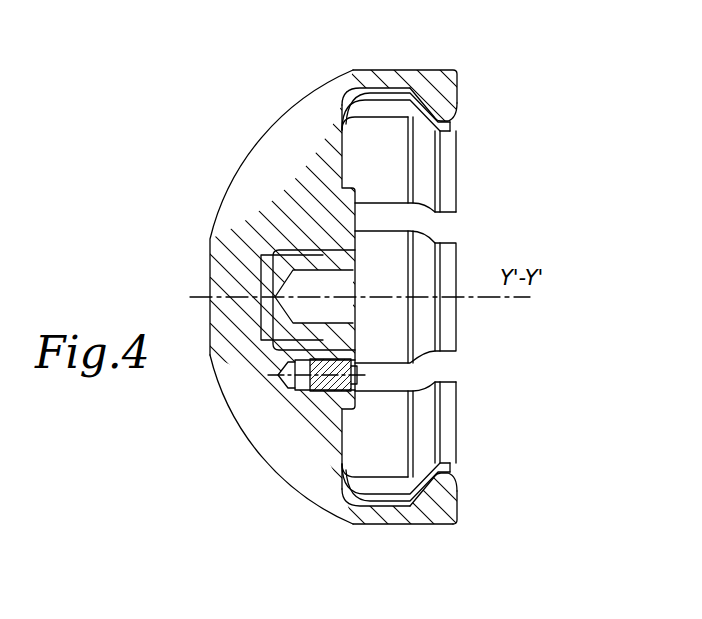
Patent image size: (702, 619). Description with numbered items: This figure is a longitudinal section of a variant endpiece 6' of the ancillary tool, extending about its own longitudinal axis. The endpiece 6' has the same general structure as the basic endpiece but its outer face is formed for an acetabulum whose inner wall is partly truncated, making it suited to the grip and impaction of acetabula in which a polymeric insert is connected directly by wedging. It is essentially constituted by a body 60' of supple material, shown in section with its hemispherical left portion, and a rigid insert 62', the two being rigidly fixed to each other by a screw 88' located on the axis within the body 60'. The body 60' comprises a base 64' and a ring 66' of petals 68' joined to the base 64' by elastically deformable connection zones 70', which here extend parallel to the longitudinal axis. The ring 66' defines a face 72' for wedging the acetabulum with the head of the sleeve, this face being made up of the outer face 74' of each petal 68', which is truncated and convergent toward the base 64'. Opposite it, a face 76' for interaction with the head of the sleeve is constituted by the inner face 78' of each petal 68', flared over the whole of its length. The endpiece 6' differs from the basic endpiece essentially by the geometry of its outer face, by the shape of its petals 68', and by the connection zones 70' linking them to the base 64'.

The body 60' is at (351, 297).
The base 64' is at (233, 212).
The endpiece 6' is at (256, 439).
The outer face 74' is at (406, 58).
The connection zones 70' is at (344, 76).
The ring 66' is at (484, 77).
The inner face 78' is at (464, 114).
The rigid insert 62' is at (421, 297).
The screw 88' is at (407, 353).
The face for interaction 76' is at (463, 473).
The petals 68' is at (460, 521).
The face for wedging 72' is at (377, 560).